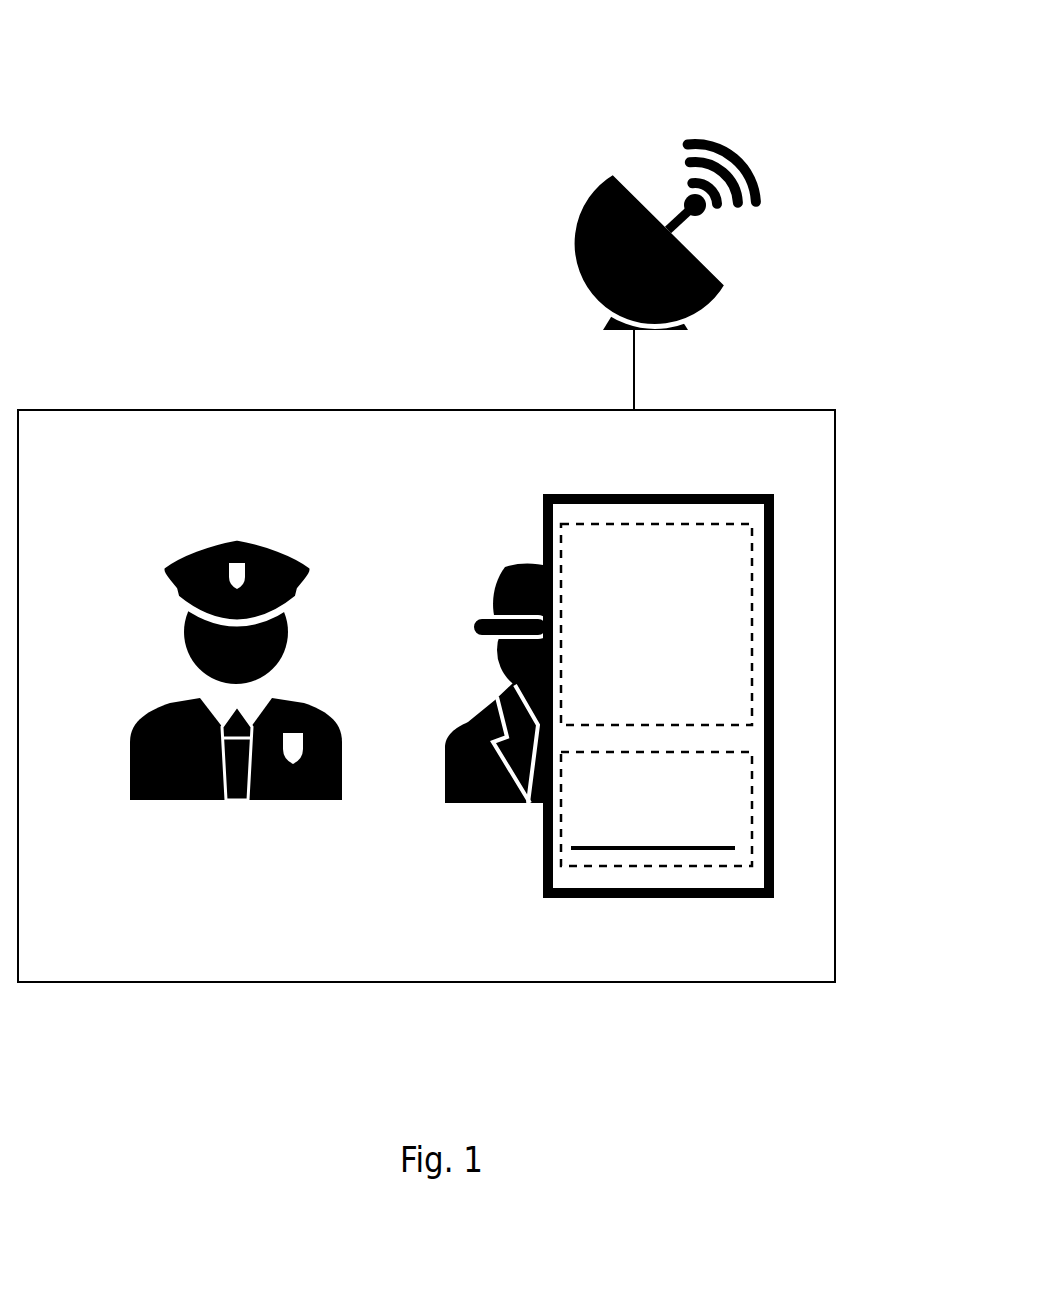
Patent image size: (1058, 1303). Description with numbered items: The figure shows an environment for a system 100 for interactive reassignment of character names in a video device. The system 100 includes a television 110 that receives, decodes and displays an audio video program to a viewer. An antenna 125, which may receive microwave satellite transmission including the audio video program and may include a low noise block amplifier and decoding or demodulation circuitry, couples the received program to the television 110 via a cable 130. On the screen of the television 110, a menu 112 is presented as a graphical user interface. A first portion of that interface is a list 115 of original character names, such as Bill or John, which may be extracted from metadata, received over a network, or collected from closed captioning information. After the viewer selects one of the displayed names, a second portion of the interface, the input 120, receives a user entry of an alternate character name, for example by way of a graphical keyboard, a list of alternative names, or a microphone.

The system 100 is at (488, 56).
The television 110 is at (164, 401).
The menu 112 is at (741, 809).
The list of original character names 115 is at (763, 621).
The input for receiving an alternate character name 120 is at (763, 748).
The antenna 125 is at (575, 221).
The cable 130 is at (619, 361).